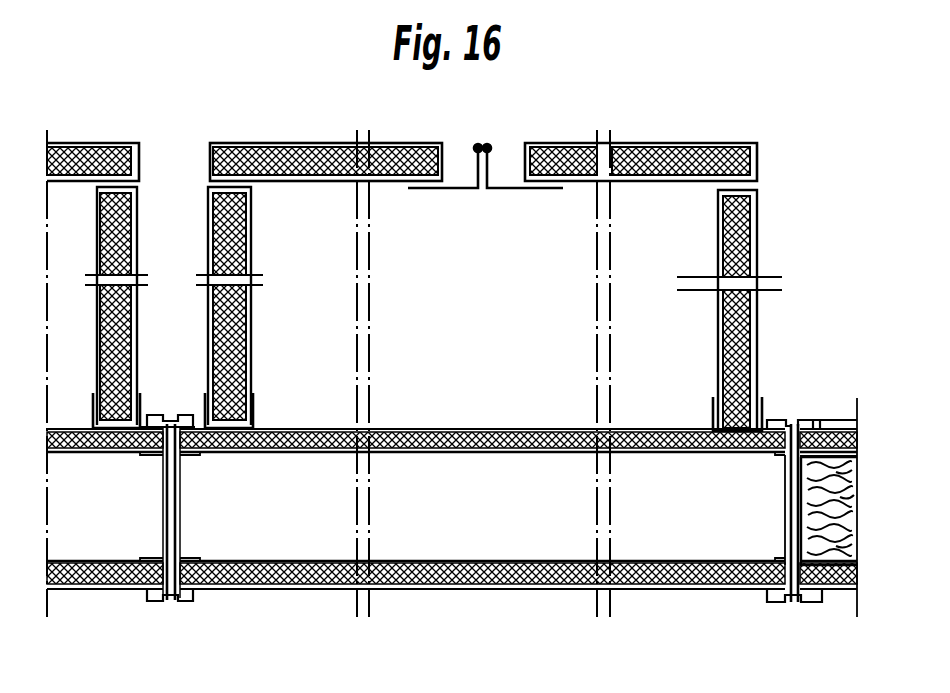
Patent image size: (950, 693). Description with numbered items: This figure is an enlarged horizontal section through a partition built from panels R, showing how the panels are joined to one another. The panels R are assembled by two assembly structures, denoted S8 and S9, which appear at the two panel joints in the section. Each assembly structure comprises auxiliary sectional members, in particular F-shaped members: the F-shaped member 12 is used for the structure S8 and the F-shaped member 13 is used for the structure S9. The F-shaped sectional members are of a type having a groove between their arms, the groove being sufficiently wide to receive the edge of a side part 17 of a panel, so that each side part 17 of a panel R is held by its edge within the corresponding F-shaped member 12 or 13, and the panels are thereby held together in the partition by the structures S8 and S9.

The side part of the panel 17 is at (120, 318).
The F-shaped member 13 is at (256, 408).
The F-shaped member 12 is at (713, 408).
The assembly structure S9 is at (173, 406).
The assembly structure S8 is at (804, 410).
The panel R is at (485, 291).